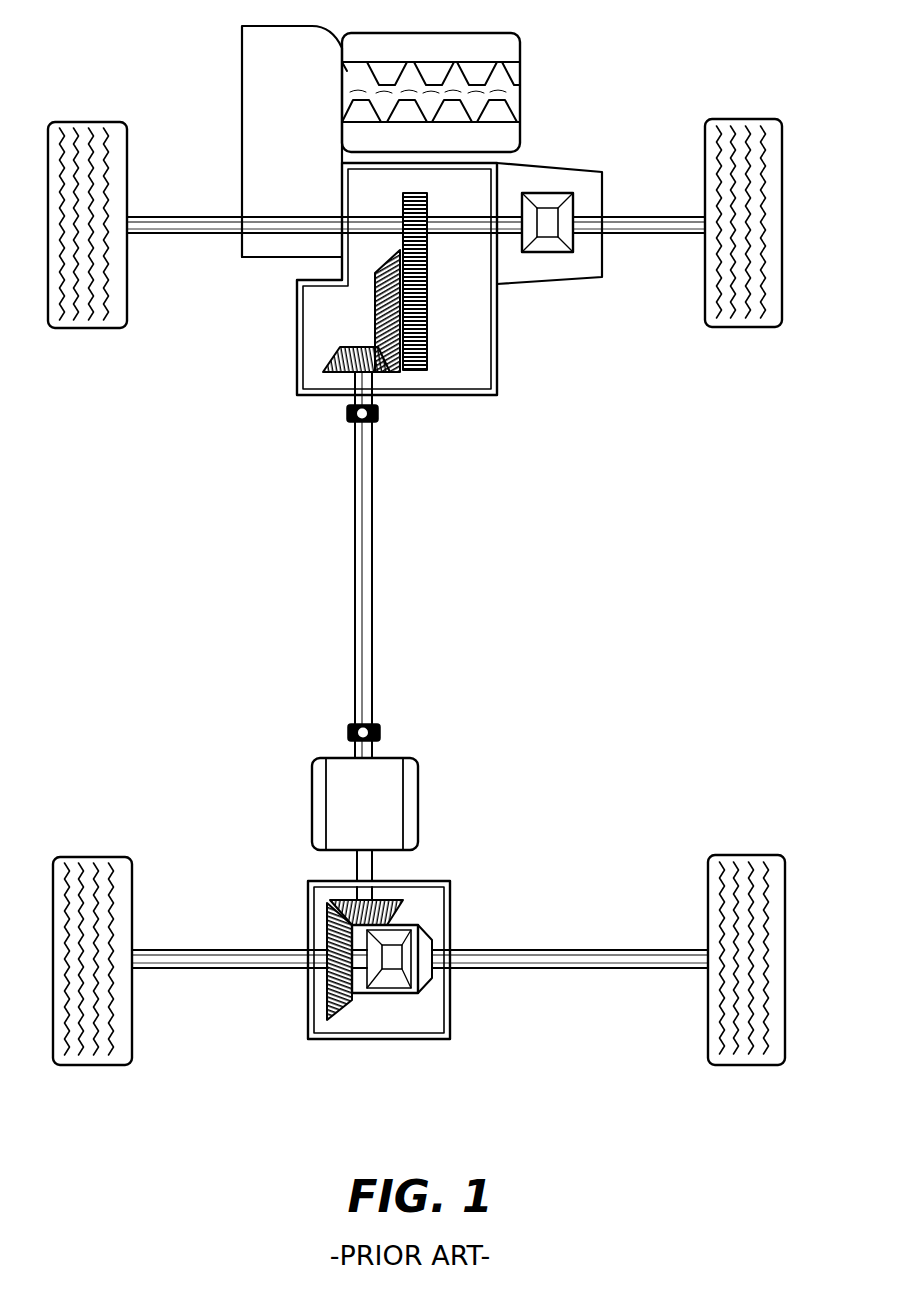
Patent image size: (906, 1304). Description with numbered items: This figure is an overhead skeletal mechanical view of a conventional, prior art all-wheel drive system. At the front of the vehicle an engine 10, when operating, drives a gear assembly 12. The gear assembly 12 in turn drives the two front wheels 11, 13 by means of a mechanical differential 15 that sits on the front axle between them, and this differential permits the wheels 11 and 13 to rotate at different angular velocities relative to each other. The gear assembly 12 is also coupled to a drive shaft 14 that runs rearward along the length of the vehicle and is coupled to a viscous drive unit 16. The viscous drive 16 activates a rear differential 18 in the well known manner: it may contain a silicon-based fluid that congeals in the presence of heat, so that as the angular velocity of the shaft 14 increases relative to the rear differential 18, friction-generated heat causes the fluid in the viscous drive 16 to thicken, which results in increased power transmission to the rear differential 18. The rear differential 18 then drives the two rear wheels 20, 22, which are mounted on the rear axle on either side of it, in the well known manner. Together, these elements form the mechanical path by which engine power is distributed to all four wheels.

The engine 10 is at (521, 68).
The wheel 11 is at (82, 121).
The gear assembly 12 is at (498, 345).
The wheel 13 is at (739, 118).
The drive shaft 14 is at (373, 567).
The mechanical differential 15 is at (548, 192).
The viscous drive unit 16 is at (419, 805).
The rear differential 18 is at (451, 912).
The wheel 20 is at (88, 856).
The wheel 22 is at (743, 854).